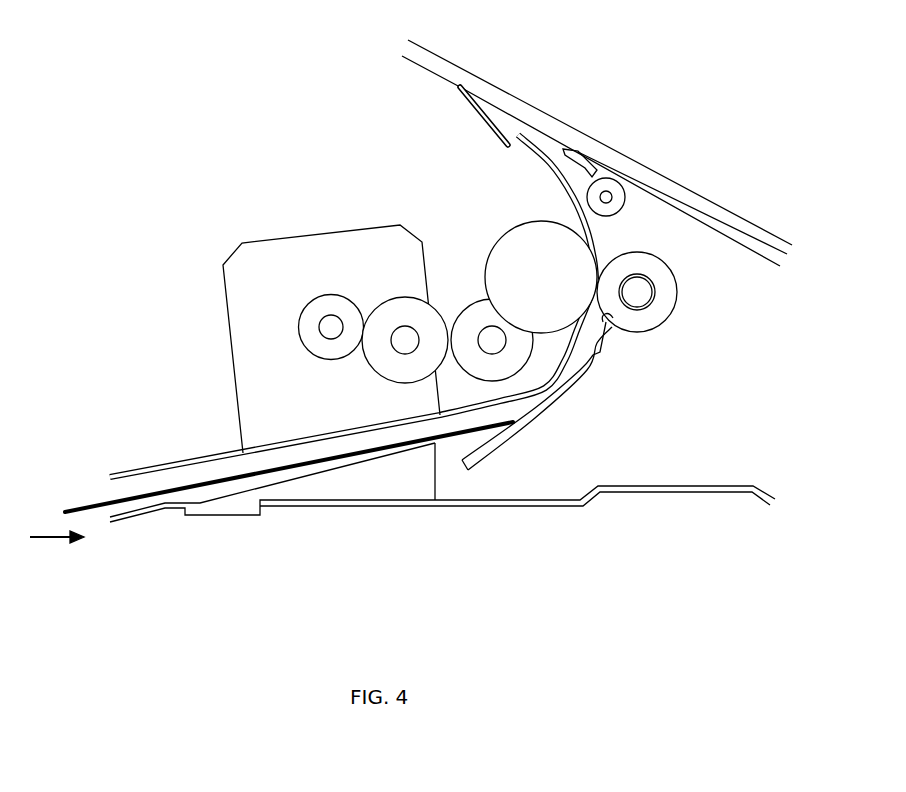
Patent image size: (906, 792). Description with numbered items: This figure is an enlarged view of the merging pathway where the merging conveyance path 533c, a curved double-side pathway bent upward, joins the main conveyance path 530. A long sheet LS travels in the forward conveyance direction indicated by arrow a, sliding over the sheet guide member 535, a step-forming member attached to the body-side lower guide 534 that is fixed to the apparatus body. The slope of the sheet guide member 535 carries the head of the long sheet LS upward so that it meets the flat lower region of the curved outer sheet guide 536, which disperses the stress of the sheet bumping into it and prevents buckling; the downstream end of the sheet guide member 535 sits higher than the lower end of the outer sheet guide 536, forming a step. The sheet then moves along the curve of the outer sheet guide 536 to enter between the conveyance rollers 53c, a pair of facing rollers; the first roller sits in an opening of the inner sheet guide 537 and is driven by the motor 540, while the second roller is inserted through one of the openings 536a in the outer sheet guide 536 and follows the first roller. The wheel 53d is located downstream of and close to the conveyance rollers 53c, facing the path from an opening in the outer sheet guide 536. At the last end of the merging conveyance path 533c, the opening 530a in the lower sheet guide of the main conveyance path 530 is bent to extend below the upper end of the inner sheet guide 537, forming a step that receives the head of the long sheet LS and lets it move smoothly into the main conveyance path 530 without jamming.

The opening 530a is at (493, 113).
The main conveyance path 530 is at (608, 162).
The wheel 53d is at (613, 187).
The inner sheet guide 537 is at (570, 197).
The conveyance rollers 53c is at (553, 237).
The motor 540 is at (332, 252).
The openings 536a is at (607, 315).
The merging conveyance path 533c is at (545, 388).
The outer sheet guide 536 is at (535, 418).
The body-side lower guide 534 is at (140, 513).
The sheet guide member 535 is at (345, 487).
The long sheet LS is at (92, 504).
The arrow a is at (57, 546).